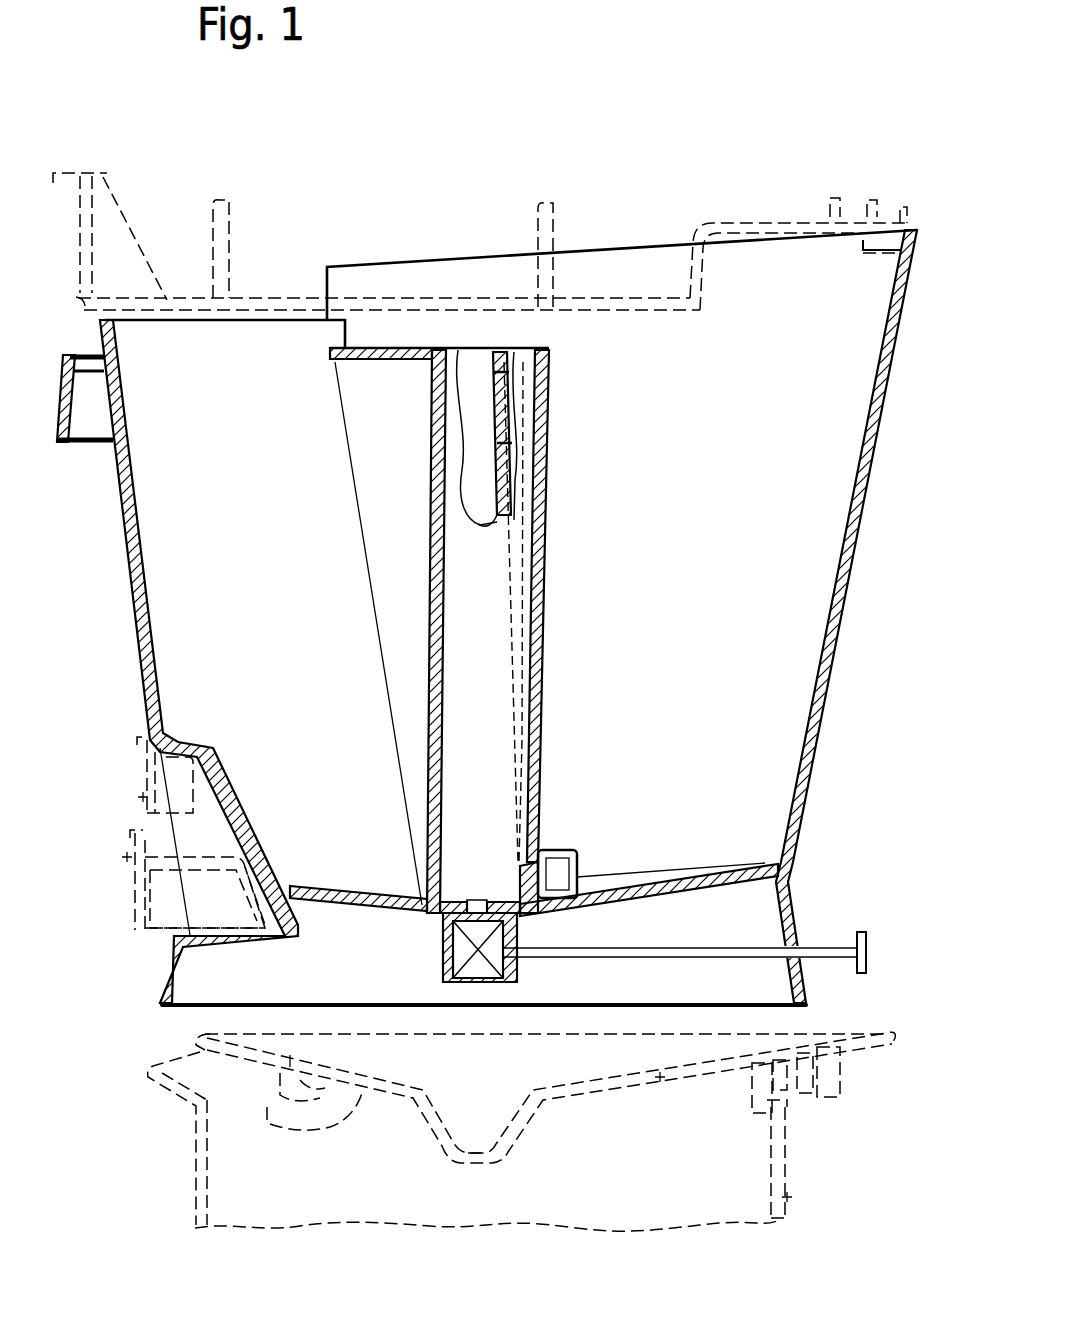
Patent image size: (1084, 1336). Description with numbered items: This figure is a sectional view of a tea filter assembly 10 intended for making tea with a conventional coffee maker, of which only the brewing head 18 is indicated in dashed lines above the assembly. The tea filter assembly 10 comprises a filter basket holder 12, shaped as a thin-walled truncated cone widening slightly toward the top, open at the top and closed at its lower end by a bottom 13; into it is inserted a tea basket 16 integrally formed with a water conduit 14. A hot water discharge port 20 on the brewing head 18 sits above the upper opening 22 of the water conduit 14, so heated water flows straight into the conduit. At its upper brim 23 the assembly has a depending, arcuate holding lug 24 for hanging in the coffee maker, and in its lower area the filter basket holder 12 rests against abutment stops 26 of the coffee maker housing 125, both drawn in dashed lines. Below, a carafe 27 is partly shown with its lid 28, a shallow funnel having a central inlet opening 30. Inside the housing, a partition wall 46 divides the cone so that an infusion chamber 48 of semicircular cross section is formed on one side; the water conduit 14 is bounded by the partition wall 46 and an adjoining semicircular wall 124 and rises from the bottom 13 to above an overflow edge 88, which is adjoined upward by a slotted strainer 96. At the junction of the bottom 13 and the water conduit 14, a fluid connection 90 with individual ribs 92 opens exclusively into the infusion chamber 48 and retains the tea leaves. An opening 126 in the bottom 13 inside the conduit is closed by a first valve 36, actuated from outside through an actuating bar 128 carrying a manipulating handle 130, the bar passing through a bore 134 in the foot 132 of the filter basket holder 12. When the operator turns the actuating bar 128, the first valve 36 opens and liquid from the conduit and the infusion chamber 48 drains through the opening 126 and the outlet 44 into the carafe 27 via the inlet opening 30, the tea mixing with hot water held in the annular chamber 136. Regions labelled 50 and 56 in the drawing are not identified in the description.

The tea filter assembly 10 is at (137, 686).
The filter basket holder 12 is at (858, 616).
The bottom 13 is at (714, 877).
The water conduit 14 is at (547, 610).
The tea basket 16 is at (837, 613).
The brewing head 18 is at (742, 214).
The hot water discharge port 20 is at (481, 292).
The upper opening 22 is at (527, 350).
The upper brim 23 is at (63, 298).
The holding lug 24 is at (64, 446).
The abutment stops 26 is at (143, 797).
The carafe 27 is at (792, 1198).
The lid 28 is at (660, 1078).
The inlet opening 30 is at (476, 1160).
The first valve 36 is at (447, 960).
The outlet 44 is at (497, 982).
The partition wall 46 is at (500, 505).
The infusion chamber 48 is at (737, 570).
The first chamber 50 is at (275, 565).
The bottom flange 56 is at (388, 905).
The overflow edge 88 is at (513, 443).
The fluid connection 90 is at (601, 849).
The ribs 92 is at (574, 847).
The strainer 96 is at (514, 399).
The semicircular wall 124 is at (433, 636).
The housing 125 is at (126, 906).
The opening 126 is at (478, 900).
The actuating bar 128 is at (826, 947).
The manipulating handle 130 is at (866, 940).
The foot 132 is at (803, 1000).
The bore 134 is at (797, 952).
The annular chamber 136 is at (499, 720).